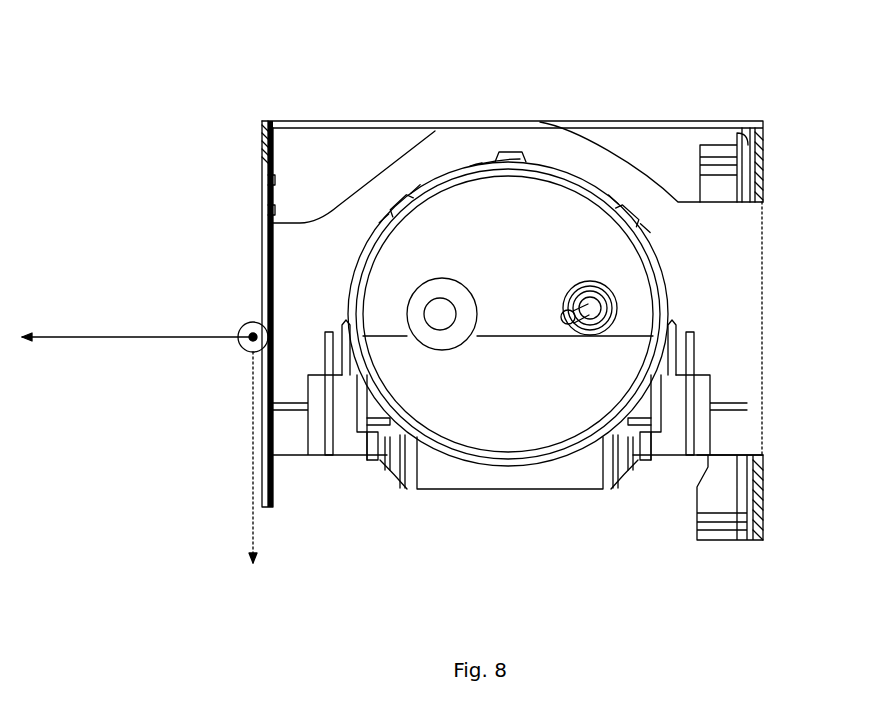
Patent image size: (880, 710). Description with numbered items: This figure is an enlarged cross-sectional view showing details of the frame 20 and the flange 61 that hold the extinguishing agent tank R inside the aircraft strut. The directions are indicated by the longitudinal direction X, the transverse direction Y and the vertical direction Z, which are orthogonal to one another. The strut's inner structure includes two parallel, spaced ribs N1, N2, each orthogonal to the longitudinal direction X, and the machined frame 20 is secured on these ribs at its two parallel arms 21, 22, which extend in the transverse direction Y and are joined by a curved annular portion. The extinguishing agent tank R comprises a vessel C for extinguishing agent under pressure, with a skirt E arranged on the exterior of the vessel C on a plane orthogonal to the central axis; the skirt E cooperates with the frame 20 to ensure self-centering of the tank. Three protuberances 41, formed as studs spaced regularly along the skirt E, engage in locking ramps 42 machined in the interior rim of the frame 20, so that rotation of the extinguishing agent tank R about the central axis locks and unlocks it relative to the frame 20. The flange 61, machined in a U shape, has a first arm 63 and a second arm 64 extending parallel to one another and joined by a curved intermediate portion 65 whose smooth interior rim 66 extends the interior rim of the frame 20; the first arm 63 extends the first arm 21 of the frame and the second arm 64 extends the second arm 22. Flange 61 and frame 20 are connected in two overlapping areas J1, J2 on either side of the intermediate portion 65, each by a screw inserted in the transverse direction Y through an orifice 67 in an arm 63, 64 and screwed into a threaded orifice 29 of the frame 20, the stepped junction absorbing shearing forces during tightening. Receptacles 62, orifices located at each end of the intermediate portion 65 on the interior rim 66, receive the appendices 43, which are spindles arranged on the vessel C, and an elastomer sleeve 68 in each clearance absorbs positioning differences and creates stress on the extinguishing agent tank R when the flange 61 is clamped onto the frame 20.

The frame 20 is at (370, 195).
The first arm of the frame 21 is at (322, 267).
The second arm of the frame 22 is at (758, 287).
The threaded orifice 29 is at (325, 338).
The protuberance 41 is at (402, 188).
The locking ramp 42 is at (395, 198).
The appendix 43 is at (395, 477).
The flange 61 is at (443, 477).
The receptacle 62 is at (375, 450).
The first arm of the flange 63 is at (347, 437).
The second arm of the flange 64 is at (676, 435).
The intermediate portion 65 is at (547, 466).
The interior rim 66 is at (497, 466).
The orifice 67 is at (325, 433).
The elastomer sleeve 68 is at (368, 437).
The vessel C is at (472, 164).
The skirt E is at (663, 270).
The extinguishing agent tank R is at (605, 247).
The longitudinal direction X is at (70, 337).
The transverse direction Y is at (252, 537).
The vertical direction Z is at (248, 326).
The rib N1 is at (262, 188).
The rib N2 is at (727, 186).
The overlapping area J1 is at (296, 383).
The overlapping area J2 is at (717, 377).